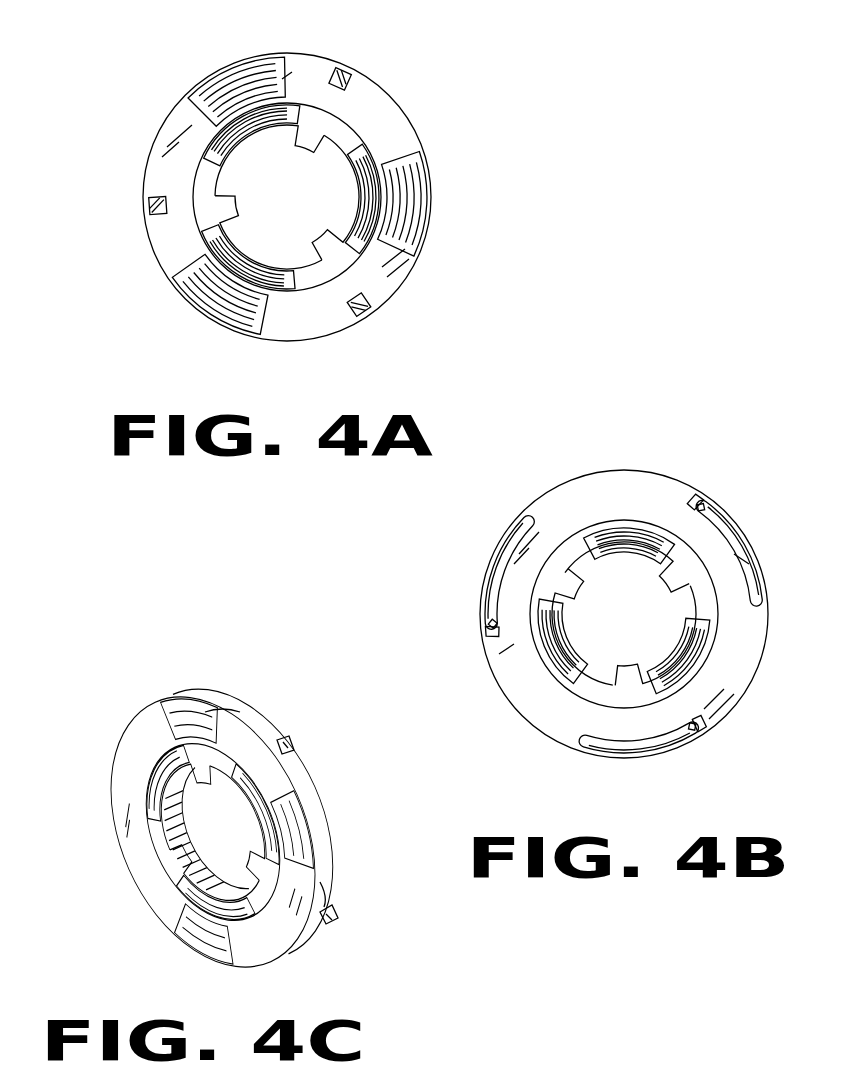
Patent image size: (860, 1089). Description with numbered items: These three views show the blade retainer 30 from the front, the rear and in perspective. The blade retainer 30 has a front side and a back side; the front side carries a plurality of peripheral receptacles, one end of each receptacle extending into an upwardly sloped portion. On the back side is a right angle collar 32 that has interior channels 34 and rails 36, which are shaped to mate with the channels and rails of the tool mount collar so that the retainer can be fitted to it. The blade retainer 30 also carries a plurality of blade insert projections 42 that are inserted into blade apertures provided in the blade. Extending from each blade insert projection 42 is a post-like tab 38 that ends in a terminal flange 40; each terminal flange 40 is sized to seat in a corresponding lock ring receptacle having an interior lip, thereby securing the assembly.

In FIG. 4A, the blade retainer 30 is at (412, 128).
In FIG. 4B, the blade retainer 30 is at (610, 470).
In FIG. 4C, the blade retainer 30 is at (210, 700).
In FIG. 4A, the right angle collar 32 is at (347, 253).
In FIG. 4B, the right angle collar 32 is at (553, 687).
In FIG. 4C, the right angle collar 32 is at (187, 767).
In FIG. 4A, the interior channels 34 is at (298, 118).
In FIG. 4B, the interior channels 34 is at (670, 560).
In FIG. 4C, the interior channels 34 is at (213, 777).
In FIG. 4A, the rails 36 is at (217, 190).
In FIG. 4B, the rails 36 is at (566, 568).
In FIG. 4C, the rails 36 is at (187, 797).
In FIG. 4B, the post-like tab 38 is at (710, 492).
In FIG. 4C, the post-like tab 38 is at (292, 762).
In FIG. 4A, the terminal flange 40 is at (343, 78).
In FIG. 4B, the terminal flange 40 is at (703, 500).
In FIG. 4C, the terminal flange 40 is at (287, 740).
In FIG. 4B, the blade insert projections 42 is at (512, 552).
In FIG. 4C, the blade insert projections 42 is at (218, 713).